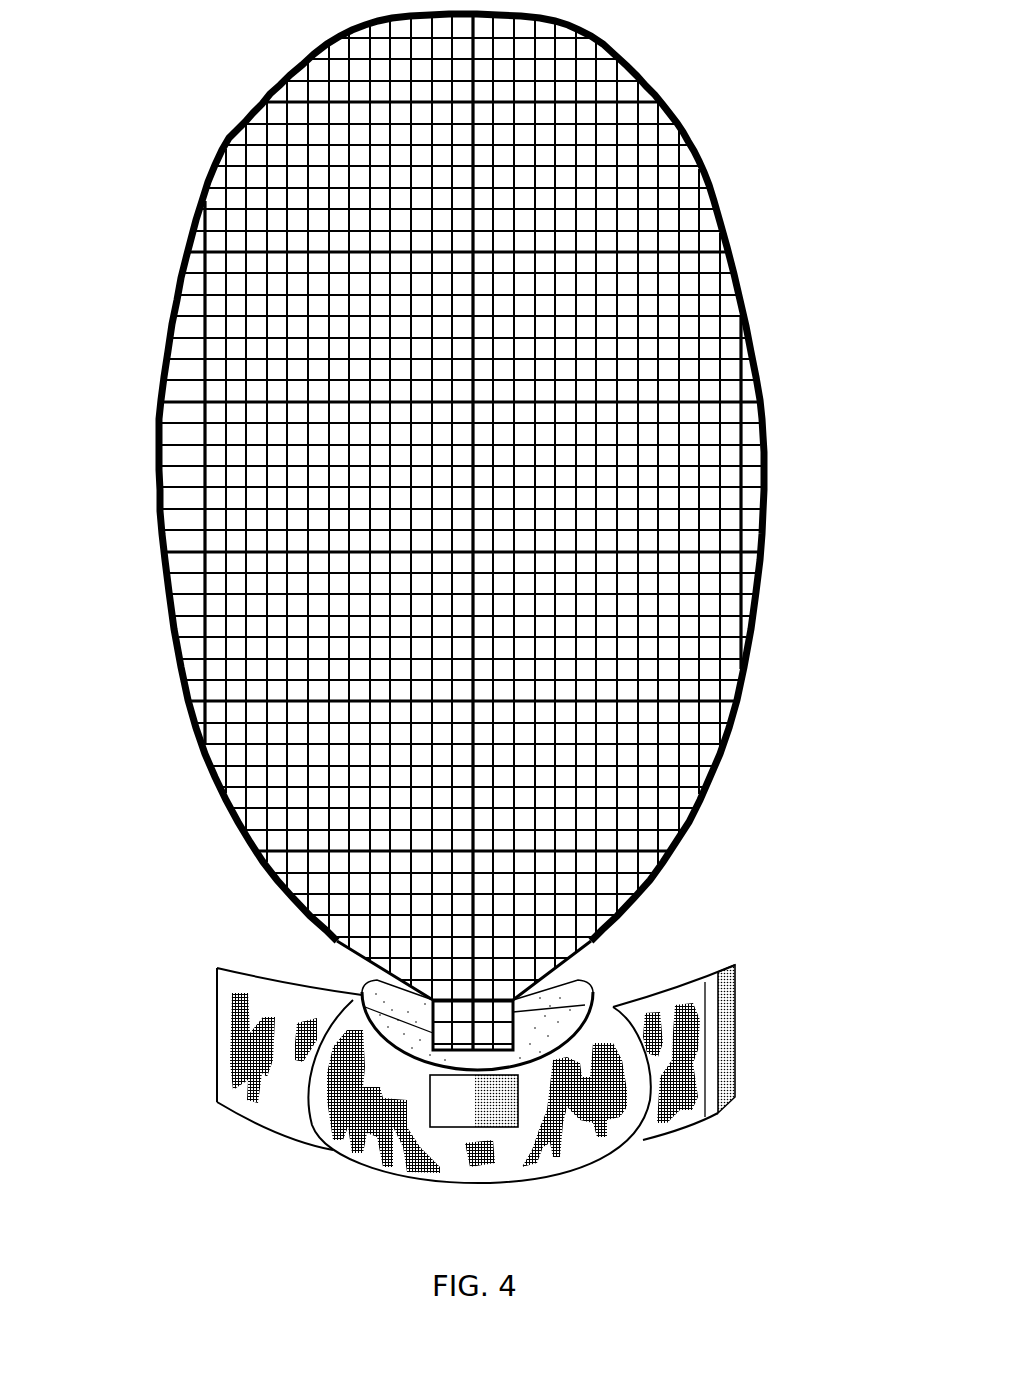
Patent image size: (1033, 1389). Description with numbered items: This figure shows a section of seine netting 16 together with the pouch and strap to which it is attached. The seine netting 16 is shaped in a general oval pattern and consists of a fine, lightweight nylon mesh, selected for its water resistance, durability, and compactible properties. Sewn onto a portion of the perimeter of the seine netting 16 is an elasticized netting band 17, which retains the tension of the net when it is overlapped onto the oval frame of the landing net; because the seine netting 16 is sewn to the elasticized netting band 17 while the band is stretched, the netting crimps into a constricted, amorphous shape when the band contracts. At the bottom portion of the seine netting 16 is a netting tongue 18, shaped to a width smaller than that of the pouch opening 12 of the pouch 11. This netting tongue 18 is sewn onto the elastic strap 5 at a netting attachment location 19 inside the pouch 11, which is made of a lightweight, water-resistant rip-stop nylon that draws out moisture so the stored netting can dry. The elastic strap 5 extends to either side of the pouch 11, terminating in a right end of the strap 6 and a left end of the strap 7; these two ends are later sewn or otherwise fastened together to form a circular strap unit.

The seine netting 16 is at (348, 167).
The elasticized netting band 17 is at (660, 90).
The pouch opening 12 is at (400, 1003).
The netting tongue 18 is at (580, 983).
The netting attachment location 19 is at (400, 1002).
The left end of the strap 7 is at (210, 1040).
The elastic strap 5 is at (262, 1130).
The right end of the strap 6 is at (747, 1025).
The pouch 11 is at (572, 1137).